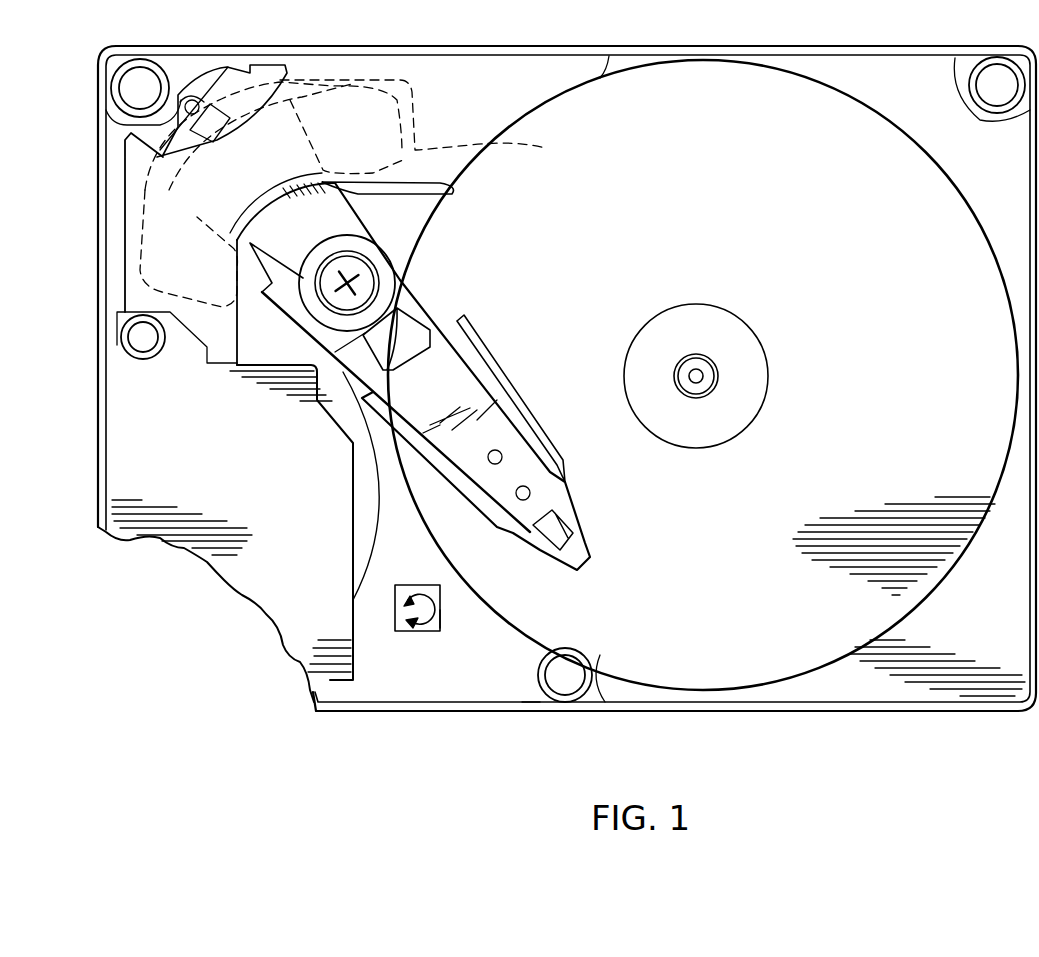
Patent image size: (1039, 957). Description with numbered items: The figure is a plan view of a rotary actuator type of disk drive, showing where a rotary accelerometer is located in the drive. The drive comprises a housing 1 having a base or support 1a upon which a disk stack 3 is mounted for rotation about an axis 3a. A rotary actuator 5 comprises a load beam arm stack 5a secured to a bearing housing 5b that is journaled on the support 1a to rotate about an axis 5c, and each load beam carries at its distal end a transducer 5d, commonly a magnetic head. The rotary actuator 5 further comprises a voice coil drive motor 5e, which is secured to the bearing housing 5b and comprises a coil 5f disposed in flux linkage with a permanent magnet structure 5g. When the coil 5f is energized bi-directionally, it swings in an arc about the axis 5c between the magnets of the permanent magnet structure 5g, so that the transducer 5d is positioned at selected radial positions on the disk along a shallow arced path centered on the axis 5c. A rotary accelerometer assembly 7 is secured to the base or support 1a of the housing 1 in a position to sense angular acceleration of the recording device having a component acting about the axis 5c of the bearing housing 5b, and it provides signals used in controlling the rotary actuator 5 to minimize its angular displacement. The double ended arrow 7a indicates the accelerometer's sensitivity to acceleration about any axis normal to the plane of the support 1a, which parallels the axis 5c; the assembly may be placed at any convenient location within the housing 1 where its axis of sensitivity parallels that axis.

The housing 1 is at (310, 696).
The base or support 1a is at (436, 686).
The disk stack 3 is at (510, 620).
The axis 3a is at (697, 376).
The rotary actuator 5 is at (420, 290).
The load beam arm stack 5a is at (497, 367).
The bearing housing 5b is at (357, 238).
The axis 5c is at (360, 280).
The transducer 5d is at (572, 538).
The voice coil drive motor 5e is at (256, 175).
The coil 5f is at (452, 190).
The permanent magnet structure 5g is at (545, 148).
The rotary accelerometer assembly 7 is at (420, 597).
The double ended arrow 7a is at (440, 628).